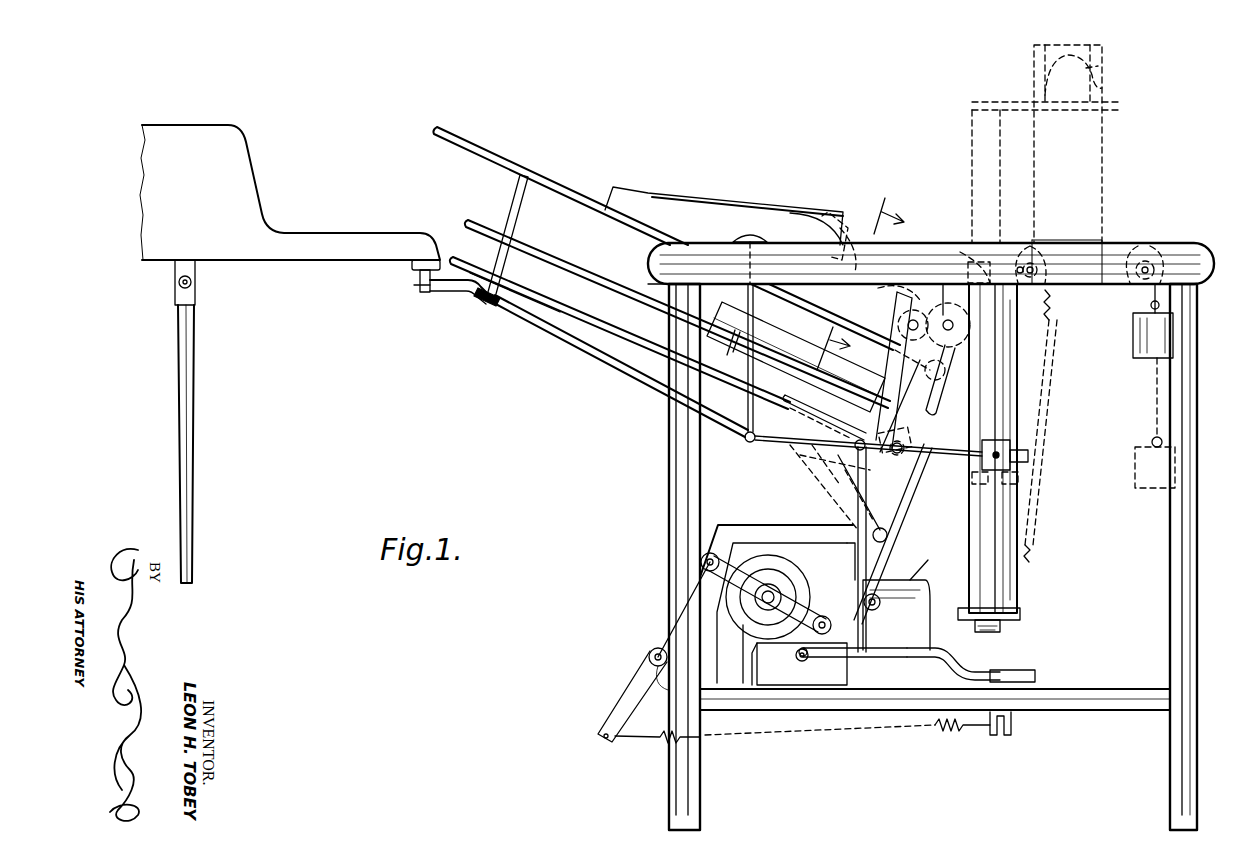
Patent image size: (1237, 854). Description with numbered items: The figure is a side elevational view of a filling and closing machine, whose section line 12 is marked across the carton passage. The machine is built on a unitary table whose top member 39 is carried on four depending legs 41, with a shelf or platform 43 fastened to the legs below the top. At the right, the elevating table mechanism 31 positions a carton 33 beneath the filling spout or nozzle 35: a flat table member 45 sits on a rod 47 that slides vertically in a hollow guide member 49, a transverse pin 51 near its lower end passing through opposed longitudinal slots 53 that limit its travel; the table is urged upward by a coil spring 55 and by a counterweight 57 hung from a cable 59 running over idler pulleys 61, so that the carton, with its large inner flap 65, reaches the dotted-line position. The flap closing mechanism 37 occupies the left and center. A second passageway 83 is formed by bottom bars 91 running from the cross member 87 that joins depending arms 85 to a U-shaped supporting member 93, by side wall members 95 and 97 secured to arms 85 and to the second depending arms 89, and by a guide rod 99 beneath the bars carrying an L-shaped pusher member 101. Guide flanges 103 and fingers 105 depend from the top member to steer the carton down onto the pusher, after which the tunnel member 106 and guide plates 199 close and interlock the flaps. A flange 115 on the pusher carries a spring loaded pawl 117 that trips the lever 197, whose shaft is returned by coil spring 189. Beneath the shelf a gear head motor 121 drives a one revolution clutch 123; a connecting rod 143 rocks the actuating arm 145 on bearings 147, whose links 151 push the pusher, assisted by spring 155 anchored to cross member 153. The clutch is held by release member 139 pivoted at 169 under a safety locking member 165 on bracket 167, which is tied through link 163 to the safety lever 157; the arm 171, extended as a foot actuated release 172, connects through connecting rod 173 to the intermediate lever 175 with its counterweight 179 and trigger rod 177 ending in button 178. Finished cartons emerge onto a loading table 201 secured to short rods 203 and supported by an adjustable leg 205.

The section line 12 is at (875, 284).
The elevating table mechanism 31 is at (1057, 493).
The carton 33 is at (1103, 190).
The filling spout or nozzle 35 is at (1040, 70).
The flap closing mechanism 37 is at (714, 470).
The top member 39 is at (1170, 247).
The legs 41 is at (675, 762).
The shelf or platform 43 is at (1088, 712).
The table member 45 is at (984, 108).
The rod or tubular member 47 is at (970, 178).
The hollow guide member 49 is at (969, 536).
The pin or rod 51 is at (1021, 612).
The slots 53 is at (969, 555).
The coil spring 55 is at (1040, 414).
The counterweight 57 is at (1150, 350).
The cable 59 is at (1017, 332).
The idler pulleys 61 is at (1068, 282).
The inner flap 65 is at (1104, 131).
The second chute or passageway 83 is at (606, 322).
The depending arms 85 is at (917, 407).
The cross member 87 is at (902, 493).
The depending arms 89 is at (662, 283).
The bars 91 is at (514, 290).
The U-shaped supporting member 93 is at (518, 199).
The side wall members or rods 95 is at (574, 268).
The side wall members 97 is at (563, 184).
The guide rod 99 is at (650, 367).
The pusher member 101 is at (848, 406).
The guide flanges or plates 103 is at (812, 298).
The fingers 105 is at (860, 242).
The tunnel member 106 is at (776, 185).
The flange or ear member 115 is at (900, 372).
The pawl 117 is at (932, 360).
The gear head motor 121 is at (888, 586).
The one revolution clutch 123 is at (796, 576).
The release member 139 is at (799, 664).
The connecting rod 143 is at (724, 603).
The actuating arm 145 is at (634, 700).
The bearings 147 is at (660, 649).
The links 151 is at (832, 470).
The cross member 153 is at (1015, 730).
The spring 155 is at (852, 730).
The safety lever 157 is at (798, 396).
The link 163 is at (908, 478).
The safety locking member 165 is at (934, 572).
The bracket 167 is at (853, 664).
The pivot 169 is at (795, 667).
The arm 171 is at (947, 662).
The foot actuated release 172 is at (1030, 672).
The connecting rod 173 is at (856, 506).
The intermediate lever 175 is at (862, 379).
The trigger or release rod 177 is at (758, 344).
The button 178 is at (742, 239).
The counterweight 179 is at (1028, 450).
The coil spring 189 is at (962, 256).
The L-shaped arm or lever 197 is at (889, 293).
The guide plates 199 is at (733, 338).
The loading table 201 is at (292, 250).
The short rods 203 is at (456, 293).
The adjustable leg 205 is at (193, 468).